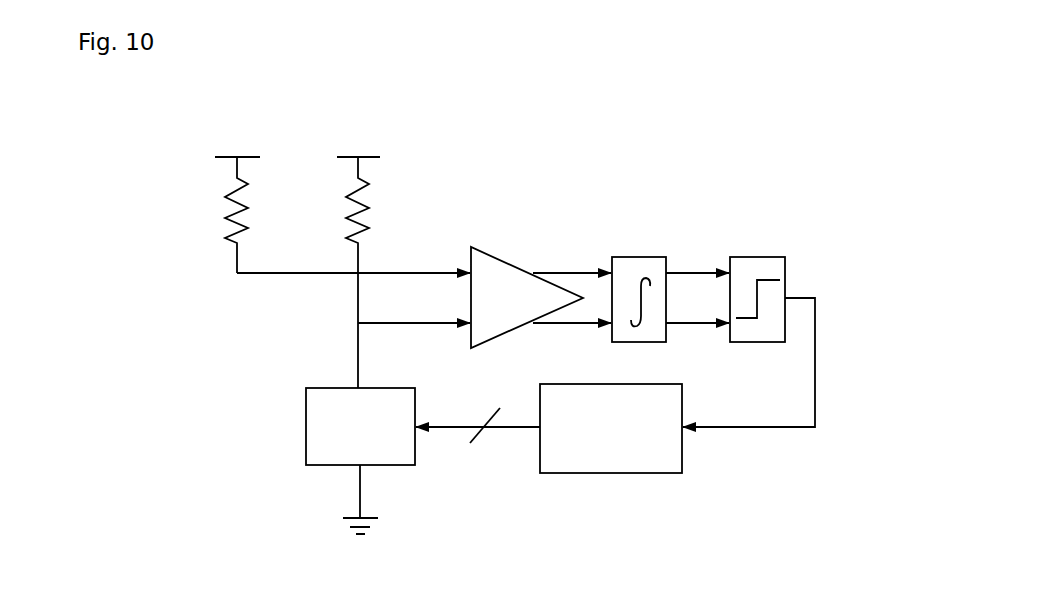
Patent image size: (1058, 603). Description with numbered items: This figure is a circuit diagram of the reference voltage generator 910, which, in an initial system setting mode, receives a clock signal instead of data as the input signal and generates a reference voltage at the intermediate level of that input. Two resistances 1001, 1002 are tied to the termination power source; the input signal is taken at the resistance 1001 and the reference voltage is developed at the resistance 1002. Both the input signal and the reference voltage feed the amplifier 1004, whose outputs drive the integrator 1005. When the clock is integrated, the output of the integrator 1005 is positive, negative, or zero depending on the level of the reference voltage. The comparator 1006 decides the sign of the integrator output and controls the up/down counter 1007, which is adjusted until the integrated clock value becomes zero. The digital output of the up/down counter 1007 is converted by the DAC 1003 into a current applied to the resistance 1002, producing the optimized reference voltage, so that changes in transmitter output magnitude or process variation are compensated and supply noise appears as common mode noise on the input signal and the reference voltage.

The reference voltage generator 910 is at (160, 177).
The resistance 1001 is at (261, 201).
The resistance 1002 is at (379, 201).
The digital-analog converter (DAC) 1003 is at (388, 466).
The amplifier 1004 is at (488, 253).
The integrator 1005 is at (642, 257).
The comparator 1006 is at (762, 257).
The up/down counter 1007 is at (630, 474).